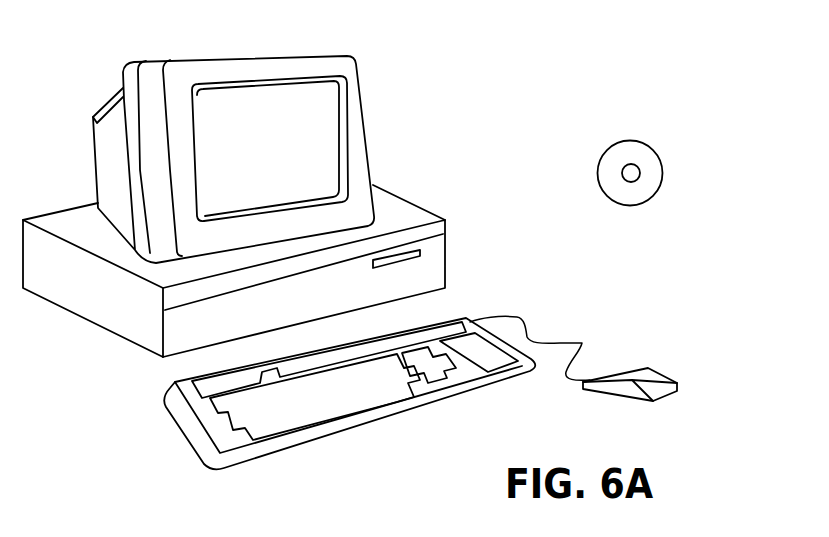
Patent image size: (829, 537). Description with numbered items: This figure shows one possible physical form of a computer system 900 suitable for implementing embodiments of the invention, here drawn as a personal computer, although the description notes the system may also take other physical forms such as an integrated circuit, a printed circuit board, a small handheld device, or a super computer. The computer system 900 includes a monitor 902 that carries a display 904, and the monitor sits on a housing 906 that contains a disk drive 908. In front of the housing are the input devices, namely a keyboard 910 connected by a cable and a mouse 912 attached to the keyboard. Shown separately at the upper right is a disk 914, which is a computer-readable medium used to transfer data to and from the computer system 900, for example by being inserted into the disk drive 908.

The computer system 900 is at (529, 49).
The monitor 902 is at (367, 157).
The display 904 is at (325, 113).
The housing 906 is at (126, 341).
The disk drive 908 is at (424, 249).
The keyboard 910 is at (357, 426).
The mouse 912 is at (657, 371).
The disk 914 is at (647, 144).